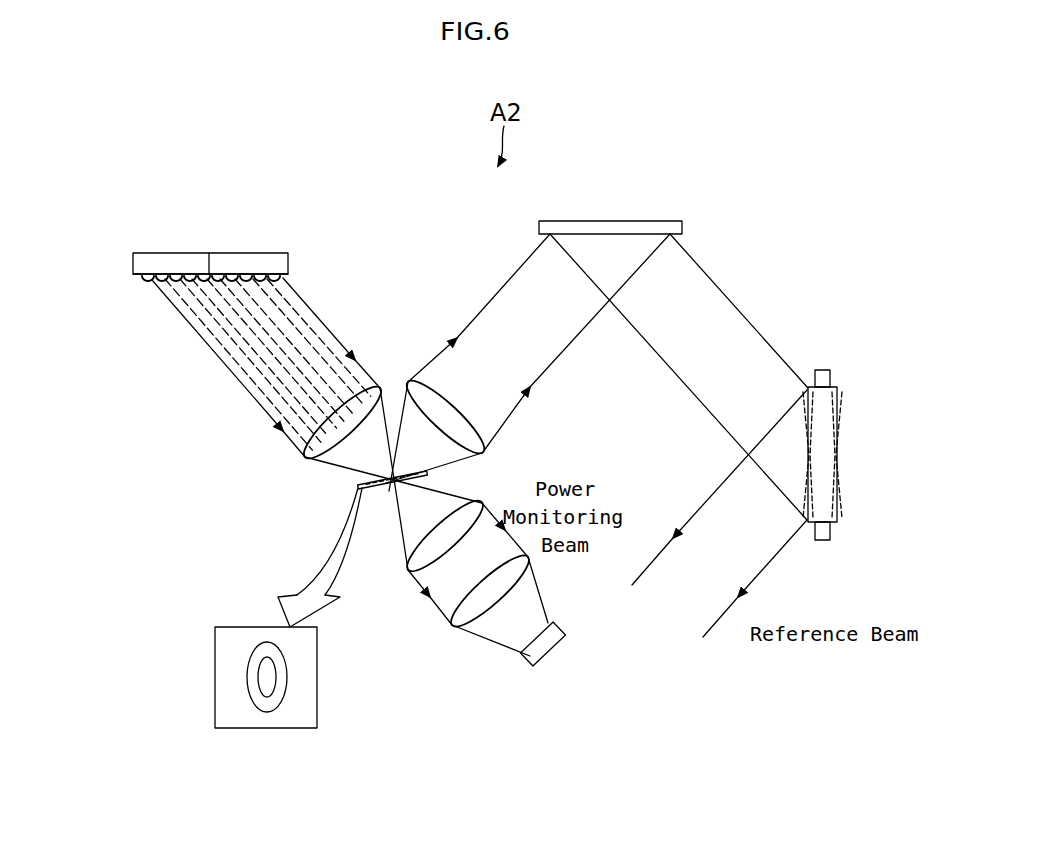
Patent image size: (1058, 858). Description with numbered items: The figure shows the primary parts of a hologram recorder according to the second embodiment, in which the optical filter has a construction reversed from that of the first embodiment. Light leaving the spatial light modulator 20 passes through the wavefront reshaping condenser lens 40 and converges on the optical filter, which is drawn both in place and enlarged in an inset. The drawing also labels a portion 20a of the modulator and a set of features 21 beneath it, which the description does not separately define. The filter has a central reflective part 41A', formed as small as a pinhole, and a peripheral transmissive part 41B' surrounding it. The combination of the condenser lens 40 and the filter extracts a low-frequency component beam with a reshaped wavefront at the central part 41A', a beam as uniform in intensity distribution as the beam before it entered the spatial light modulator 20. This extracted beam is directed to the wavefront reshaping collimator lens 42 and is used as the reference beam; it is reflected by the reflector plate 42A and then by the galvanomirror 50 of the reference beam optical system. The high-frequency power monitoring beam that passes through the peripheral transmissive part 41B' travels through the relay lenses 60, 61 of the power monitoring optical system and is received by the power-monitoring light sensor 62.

The spatial light modulator 20 is at (188, 262).
The emitting surface of light source 20a is at (290, 275).
The light emitting elements 21 is at (183, 280).
The condenser lens 40 is at (305, 458).
The central reflective part 41A' is at (326, 677).
The peripheral transmissive part 41B' is at (320, 688).
The collimator lens 42 is at (408, 381).
The reflector plate 42A is at (604, 222).
The galvanomirror 50 is at (838, 386).
The relay lens 60 is at (408, 570).
The relay lens 61 is at (452, 626).
The power-monitoring light sensor 62 is at (527, 656).